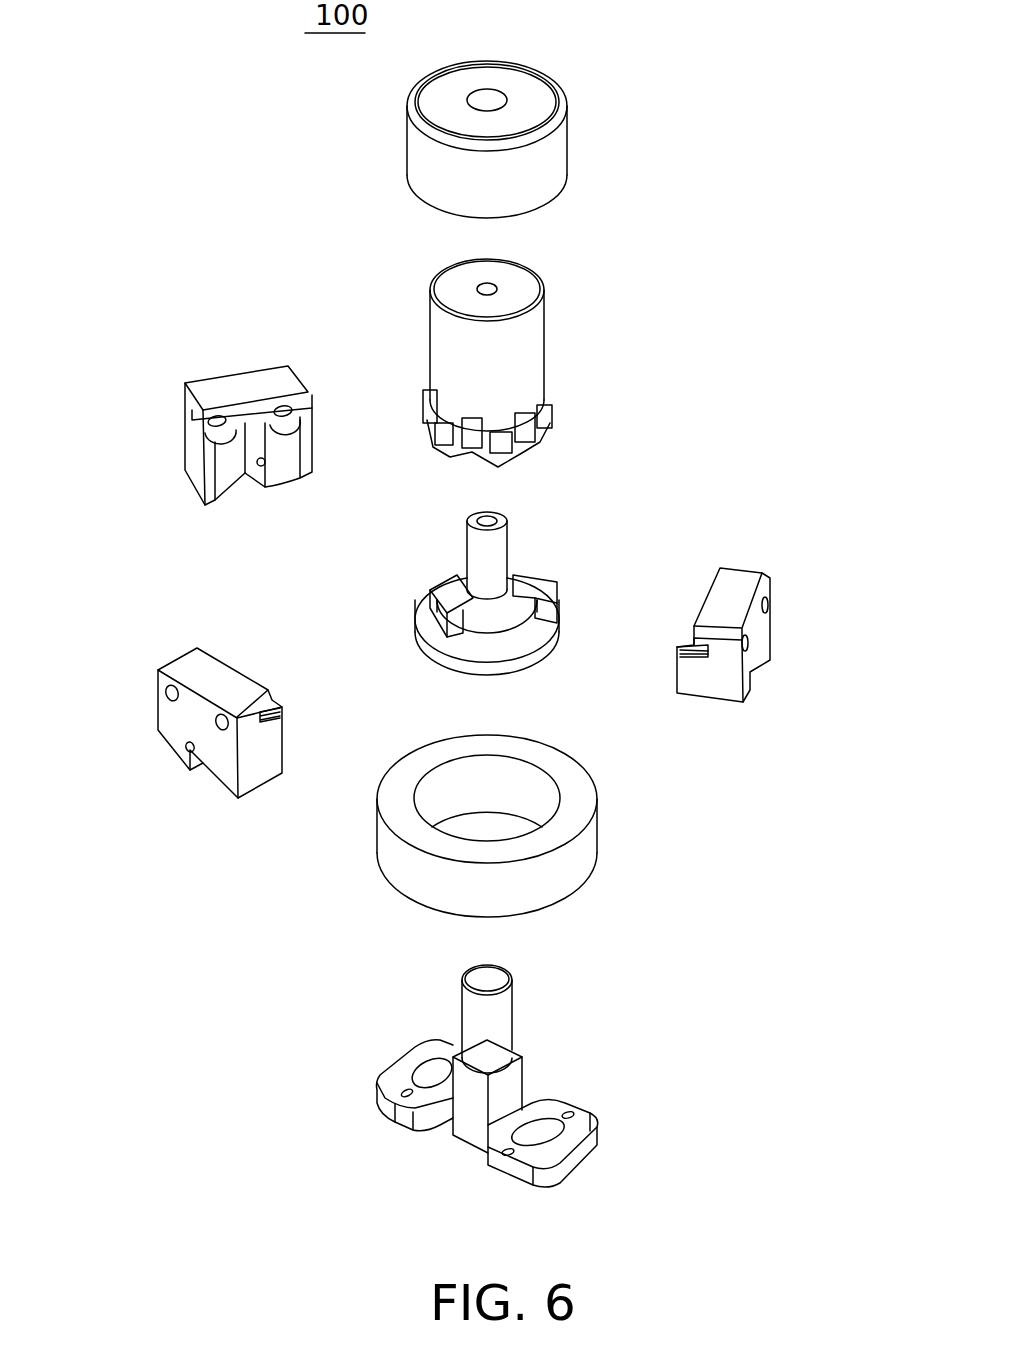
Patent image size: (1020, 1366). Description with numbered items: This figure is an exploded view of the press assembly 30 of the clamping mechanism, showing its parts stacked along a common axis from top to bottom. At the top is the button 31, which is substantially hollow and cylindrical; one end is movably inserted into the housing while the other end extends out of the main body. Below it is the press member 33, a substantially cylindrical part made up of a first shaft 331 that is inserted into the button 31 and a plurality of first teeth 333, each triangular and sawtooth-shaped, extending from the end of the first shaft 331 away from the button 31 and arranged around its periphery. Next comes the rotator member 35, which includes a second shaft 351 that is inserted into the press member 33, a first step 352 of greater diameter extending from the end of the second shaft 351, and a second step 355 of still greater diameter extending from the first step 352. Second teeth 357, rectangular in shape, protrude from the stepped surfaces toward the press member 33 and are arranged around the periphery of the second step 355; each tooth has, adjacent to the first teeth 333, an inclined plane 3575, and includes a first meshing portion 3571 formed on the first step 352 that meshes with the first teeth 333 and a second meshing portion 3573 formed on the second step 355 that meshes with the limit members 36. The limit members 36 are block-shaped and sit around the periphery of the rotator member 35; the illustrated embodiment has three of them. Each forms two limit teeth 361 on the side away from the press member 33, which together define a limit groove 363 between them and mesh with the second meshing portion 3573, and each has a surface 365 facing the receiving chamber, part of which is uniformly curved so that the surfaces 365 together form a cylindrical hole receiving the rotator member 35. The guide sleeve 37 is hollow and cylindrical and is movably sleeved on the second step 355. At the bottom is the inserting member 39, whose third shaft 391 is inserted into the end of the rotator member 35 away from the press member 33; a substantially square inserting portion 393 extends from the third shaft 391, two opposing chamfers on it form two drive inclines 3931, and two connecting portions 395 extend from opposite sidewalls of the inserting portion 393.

The press assembly 30 is at (589, 72).
The button 31 is at (553, 163).
The press member 33 is at (672, 323).
The first shaft 331 is at (505, 358).
The first teeth 333 is at (500, 457).
The limit member 36 is at (235, 385).
The limit teeth 361 is at (203, 487).
The limit groove 363 is at (242, 488).
The surface 365 is at (230, 470).
The rotator member 35 is at (324, 520).
The second shaft 351 is at (487, 545).
The first step 352 is at (452, 572).
The second step 355 is at (423, 603).
The second teeth 357 is at (427, 647).
The first meshing portion 3571 is at (528, 580).
The second meshing portion 3573 is at (548, 605).
The inclined plane 3575 is at (460, 593).
The guide sleeve 37 is at (580, 803).
The inserting member 39 is at (687, 962).
The third shaft 391 is at (500, 1015).
The inserting portion 393 is at (507, 1088).
The connecting portion 395 is at (557, 1107).
The drive incline 3931 is at (463, 1143).